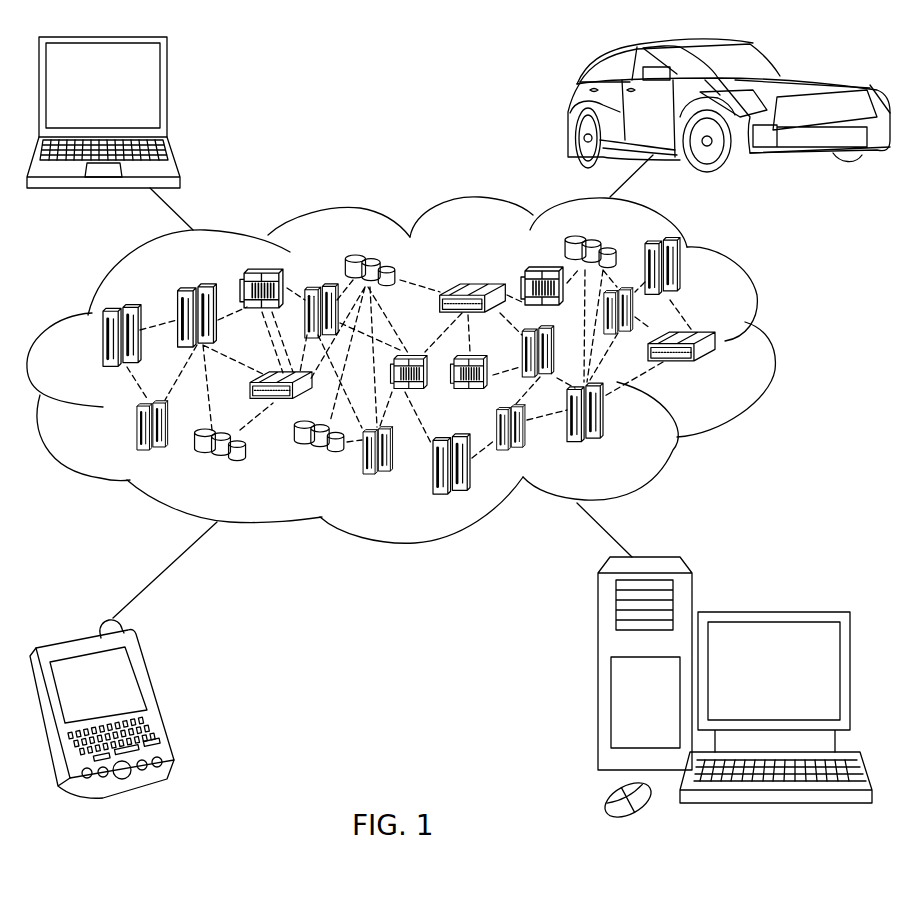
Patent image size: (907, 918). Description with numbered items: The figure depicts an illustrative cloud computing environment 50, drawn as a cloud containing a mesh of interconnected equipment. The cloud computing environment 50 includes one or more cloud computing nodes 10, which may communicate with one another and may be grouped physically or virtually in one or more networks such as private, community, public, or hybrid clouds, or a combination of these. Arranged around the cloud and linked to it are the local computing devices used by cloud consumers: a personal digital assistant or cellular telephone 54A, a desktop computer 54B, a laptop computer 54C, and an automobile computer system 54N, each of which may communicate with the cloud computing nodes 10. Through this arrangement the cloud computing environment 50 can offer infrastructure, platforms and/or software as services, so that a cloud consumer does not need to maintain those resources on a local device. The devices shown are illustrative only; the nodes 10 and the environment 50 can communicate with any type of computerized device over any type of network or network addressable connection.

The cloud computing nodes 10 is at (718, 375).
The cloud computing environment 50 is at (773, 347).
The personal digital assistant (PDA) or cellular telephone 54A is at (155, 698).
The desktop computer 54B is at (772, 612).
The laptop computer 54C is at (167, 92).
The automobile computer system 54N is at (573, 108).